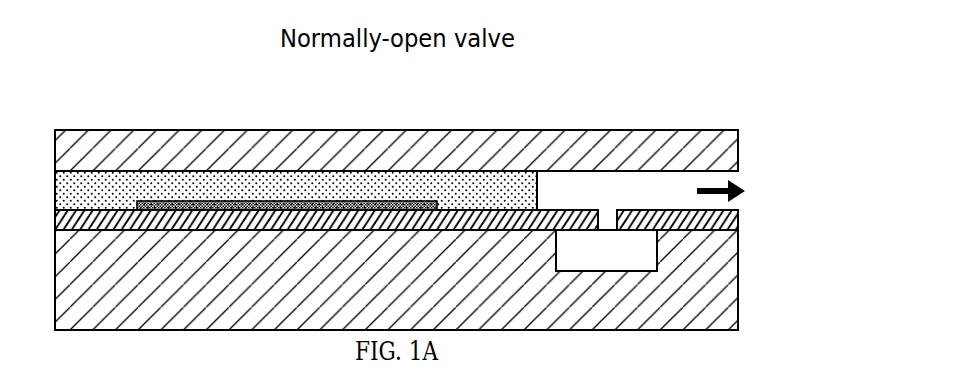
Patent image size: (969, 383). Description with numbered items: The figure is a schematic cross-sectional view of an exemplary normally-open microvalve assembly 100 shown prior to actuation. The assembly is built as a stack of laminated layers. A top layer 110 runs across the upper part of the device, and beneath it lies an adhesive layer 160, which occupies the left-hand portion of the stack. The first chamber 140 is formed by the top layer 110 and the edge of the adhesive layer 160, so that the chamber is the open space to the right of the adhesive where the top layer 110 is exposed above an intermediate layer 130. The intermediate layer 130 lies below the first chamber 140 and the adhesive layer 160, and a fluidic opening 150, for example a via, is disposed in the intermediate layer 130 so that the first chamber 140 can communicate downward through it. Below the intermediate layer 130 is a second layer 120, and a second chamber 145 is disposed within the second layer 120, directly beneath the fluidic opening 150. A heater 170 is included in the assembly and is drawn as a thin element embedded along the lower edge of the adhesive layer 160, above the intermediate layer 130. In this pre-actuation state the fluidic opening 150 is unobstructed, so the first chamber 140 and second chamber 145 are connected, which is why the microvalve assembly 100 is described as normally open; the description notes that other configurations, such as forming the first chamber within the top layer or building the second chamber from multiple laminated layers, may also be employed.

The normally-open microvalve assembly 100 is at (714, 85).
The top layer 110 is at (729, 156).
The second layer 120 is at (729, 268).
The intermediate layer 130 is at (741, 221).
The first chamber 140 is at (597, 192).
The second chamber 145 is at (597, 256).
The fluidic opening 150 is at (608, 207).
The adhesive layer 160 is at (96, 194).
The heater 170 is at (137, 212).